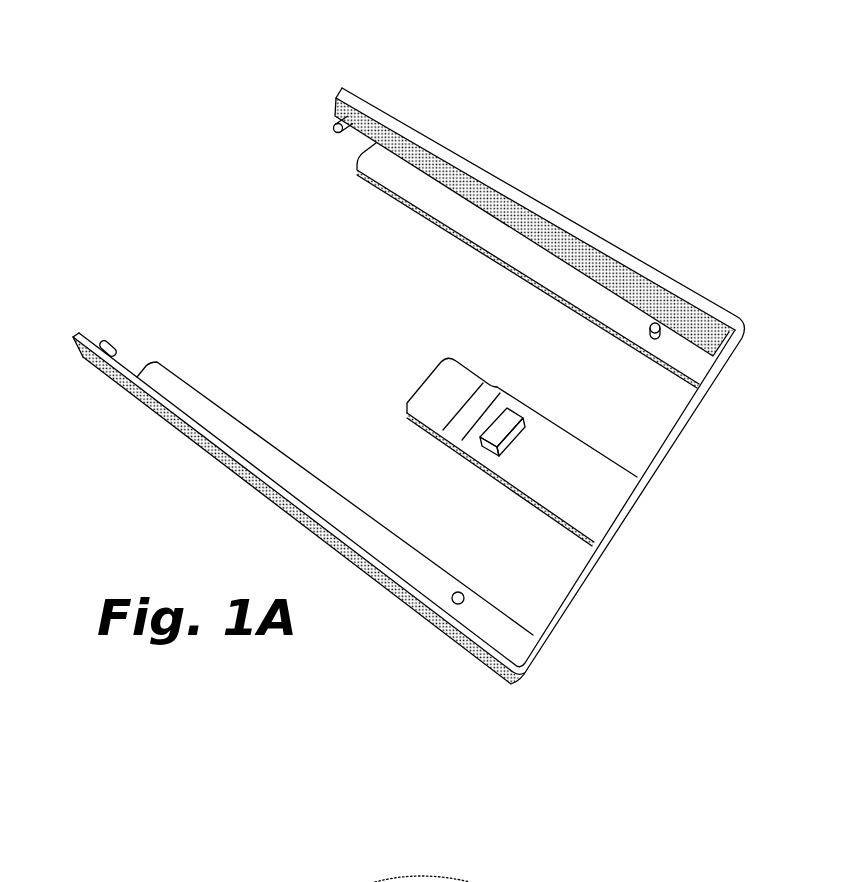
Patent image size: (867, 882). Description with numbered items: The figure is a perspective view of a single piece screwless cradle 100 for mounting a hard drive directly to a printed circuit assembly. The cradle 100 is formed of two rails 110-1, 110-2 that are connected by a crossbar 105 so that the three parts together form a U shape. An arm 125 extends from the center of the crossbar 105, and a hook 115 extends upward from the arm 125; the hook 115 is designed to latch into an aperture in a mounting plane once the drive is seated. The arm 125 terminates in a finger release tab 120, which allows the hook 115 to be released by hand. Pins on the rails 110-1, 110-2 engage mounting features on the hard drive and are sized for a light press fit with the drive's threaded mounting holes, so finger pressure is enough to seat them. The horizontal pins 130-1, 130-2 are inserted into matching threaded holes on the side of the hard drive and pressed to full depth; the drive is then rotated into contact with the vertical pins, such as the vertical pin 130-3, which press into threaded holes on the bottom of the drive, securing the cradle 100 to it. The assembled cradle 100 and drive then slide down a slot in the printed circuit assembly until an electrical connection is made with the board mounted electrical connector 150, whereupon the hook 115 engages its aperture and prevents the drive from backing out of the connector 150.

The single piece screwless cradle 100 is at (682, 117).
The crossbar 105 is at (586, 582).
The rail 110-1 is at (572, 248).
The rail 110-2 is at (232, 477).
The hook 115 is at (506, 412).
The finger release tab 120 is at (436, 405).
The arm 125 is at (612, 495).
The horizontal pin 130-1 is at (330, 127).
The horizontal pin 130-2 is at (108, 341).
The vertical pin 130-3 is at (660, 325).
The board mounted electrical connector 150 is at (309, 881).